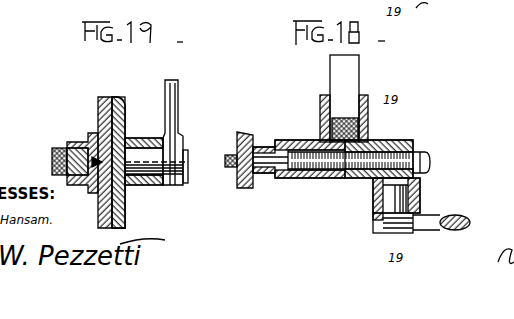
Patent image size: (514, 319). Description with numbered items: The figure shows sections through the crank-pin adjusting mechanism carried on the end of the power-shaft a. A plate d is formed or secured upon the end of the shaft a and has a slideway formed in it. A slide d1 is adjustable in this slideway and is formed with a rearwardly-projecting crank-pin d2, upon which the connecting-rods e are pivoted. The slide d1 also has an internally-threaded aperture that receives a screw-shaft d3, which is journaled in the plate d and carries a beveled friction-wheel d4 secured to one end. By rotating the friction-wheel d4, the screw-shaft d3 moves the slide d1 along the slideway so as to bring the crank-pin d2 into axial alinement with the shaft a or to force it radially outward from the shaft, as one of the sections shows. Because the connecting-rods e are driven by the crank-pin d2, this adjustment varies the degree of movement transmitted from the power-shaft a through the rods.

In FIG. 19, the shaft a is at (53, 147).
In FIG. 18, the shaft a is at (345, 87).
In FIG. 19, the plate d is at (98, 112).
In FIG. 18, the plate d is at (287, 142).
In FIG. 19, the slide d1 is at (128, 142).
In FIG. 18, the slide d1 is at (357, 178).
In FIG. 19, the crank-pin d2 is at (153, 186).
In FIG. 18, the crank-pin d2 is at (417, 193).
In FIG. 19, the screw-shaft d3 is at (52, 160).
In FIG. 18, the screw-shaft d3 is at (315, 169).
In FIG. 18, the beveled friction-wheel d4 is at (244, 132).
In FIG. 19, the connecting-rods e is at (182, 84).
In FIG. 18, the connecting-rods e is at (418, 182).